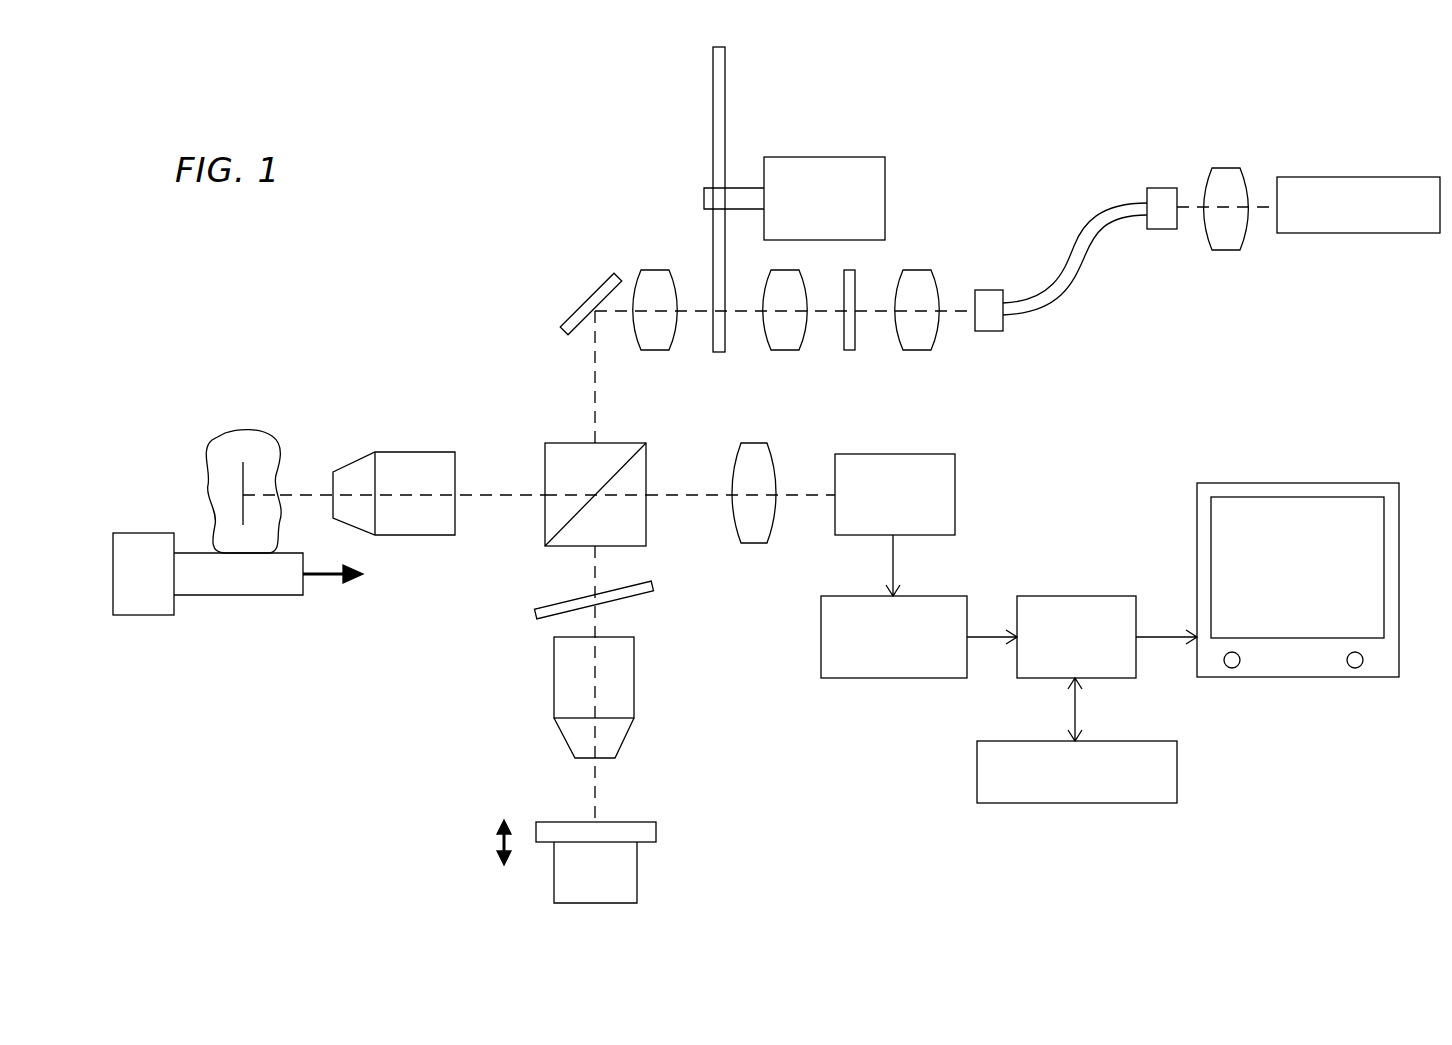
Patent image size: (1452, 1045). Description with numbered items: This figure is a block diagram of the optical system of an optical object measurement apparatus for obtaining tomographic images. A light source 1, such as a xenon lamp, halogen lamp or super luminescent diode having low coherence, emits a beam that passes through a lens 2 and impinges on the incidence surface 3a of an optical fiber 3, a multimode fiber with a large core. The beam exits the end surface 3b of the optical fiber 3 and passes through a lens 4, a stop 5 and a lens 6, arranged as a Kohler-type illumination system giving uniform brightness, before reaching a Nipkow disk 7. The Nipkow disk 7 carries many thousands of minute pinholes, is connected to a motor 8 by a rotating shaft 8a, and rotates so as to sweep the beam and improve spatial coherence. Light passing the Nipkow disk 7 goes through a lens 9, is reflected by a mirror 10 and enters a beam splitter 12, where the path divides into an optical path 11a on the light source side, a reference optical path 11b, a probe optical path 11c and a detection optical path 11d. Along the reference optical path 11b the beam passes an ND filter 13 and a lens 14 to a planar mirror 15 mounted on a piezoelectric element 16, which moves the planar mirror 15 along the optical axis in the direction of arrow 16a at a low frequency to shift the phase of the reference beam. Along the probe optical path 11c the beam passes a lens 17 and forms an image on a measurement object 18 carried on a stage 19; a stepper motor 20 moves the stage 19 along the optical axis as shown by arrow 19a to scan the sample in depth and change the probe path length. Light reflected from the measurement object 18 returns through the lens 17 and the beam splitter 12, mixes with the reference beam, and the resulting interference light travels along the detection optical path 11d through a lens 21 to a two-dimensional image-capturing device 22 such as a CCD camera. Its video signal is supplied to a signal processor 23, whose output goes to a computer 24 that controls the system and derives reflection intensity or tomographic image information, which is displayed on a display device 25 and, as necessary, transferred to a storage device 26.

The light source 1 is at (1330, 177).
The lens 2 is at (1222, 168).
The optical fiber 3 is at (1065, 298).
The incidence surface 3a is at (1165, 229).
The end surface 3b is at (988, 331).
The lens 4 is at (915, 350).
The stop 5 is at (850, 350).
The lens 6 is at (790, 350).
The Nipkow disk 7 is at (713, 88).
The motor 8 is at (810, 157).
The rotating shaft 8a is at (704, 205).
The lens 9 is at (658, 350).
The mirror 10 is at (590, 297).
The optical path on the light source side 11a is at (595, 412).
The reference optical path 11b is at (595, 565).
The probe optical path 11c is at (525, 495).
The detection optical path 11d is at (675, 495).
The beam splitter 12 is at (620, 443).
The ND filter 13 is at (535, 610).
The lens 14 is at (634, 690).
The planar mirror 15 is at (656, 830).
The piezoelectric element 16 is at (637, 878).
The arrow 16a is at (476, 842).
The lens 17 is at (393, 452).
The measurement object 18 is at (228, 440).
The stage 19 is at (243, 595).
The arrow 19a is at (342, 592).
The stepper motor 20 is at (145, 615).
The lens 21 is at (745, 443).
The two-dimensional image-capturing device 22 is at (955, 487).
The signal processor 23 is at (905, 678).
The computer 24 is at (1055, 596).
The display device 25 is at (1258, 483).
The storage device 26 is at (1177, 775).